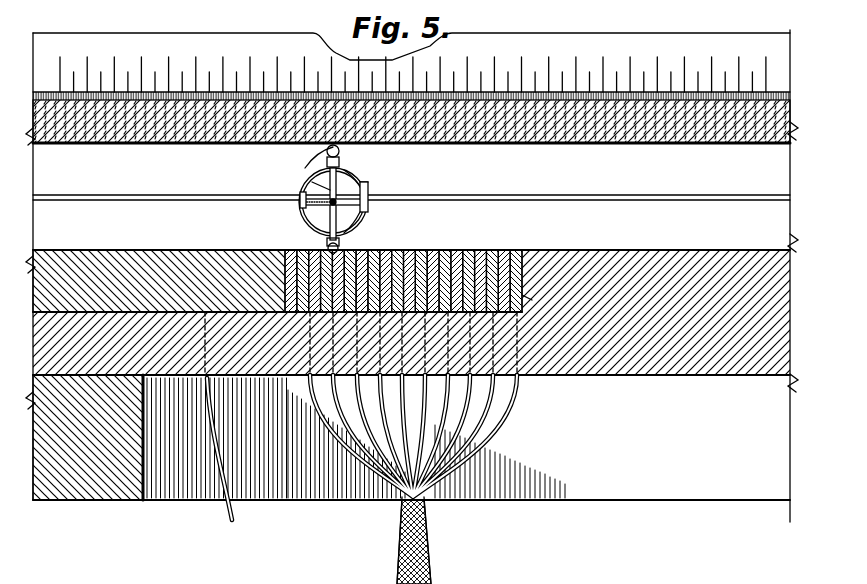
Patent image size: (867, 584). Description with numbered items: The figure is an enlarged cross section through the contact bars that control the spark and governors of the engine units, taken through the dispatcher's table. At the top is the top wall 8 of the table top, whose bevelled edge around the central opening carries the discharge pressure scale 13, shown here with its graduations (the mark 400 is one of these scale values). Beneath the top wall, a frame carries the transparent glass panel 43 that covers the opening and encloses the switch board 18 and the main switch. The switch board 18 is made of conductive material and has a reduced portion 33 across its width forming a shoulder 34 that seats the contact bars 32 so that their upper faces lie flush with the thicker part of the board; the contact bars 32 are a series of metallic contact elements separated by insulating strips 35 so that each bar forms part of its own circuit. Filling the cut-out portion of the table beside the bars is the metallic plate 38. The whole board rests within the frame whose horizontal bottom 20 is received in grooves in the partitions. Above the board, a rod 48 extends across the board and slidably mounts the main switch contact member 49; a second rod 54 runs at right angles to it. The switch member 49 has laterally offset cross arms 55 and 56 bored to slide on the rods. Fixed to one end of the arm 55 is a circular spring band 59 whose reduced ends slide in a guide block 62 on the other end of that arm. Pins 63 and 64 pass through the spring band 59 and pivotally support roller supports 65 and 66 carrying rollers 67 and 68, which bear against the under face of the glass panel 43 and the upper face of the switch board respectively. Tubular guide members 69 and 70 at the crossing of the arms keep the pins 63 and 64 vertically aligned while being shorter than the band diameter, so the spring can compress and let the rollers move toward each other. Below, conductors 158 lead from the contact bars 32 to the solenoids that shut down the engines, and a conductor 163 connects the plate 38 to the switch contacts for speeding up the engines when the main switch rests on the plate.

The top wall 8 is at (664, 37).
The discharge pressure scale 13 is at (215, 55).
The scale graduation mark 400 is at (411, 70).
The glass panel 43 is at (592, 136).
The rod 48 is at (478, 197).
The spring band 59 is at (308, 228).
The pin 63 is at (328, 170).
The rod 54 is at (308, 207).
The tubular guide member 70 is at (362, 206).
The roller 67 is at (345, 150).
The roller support 65 is at (318, 144).
The cross arm 56 is at (352, 185).
The main switch contact member 49 is at (366, 190).
The guide block 62 is at (370, 196).
The tubular guide member 69 is at (318, 190).
The cross arm 55 is at (305, 196).
The pin 64 is at (365, 226).
The roller support 66 is at (325, 242).
The roller 68 is at (342, 244).
The metallic plate 38 is at (103, 275).
The contact bars 32 is at (405, 258).
The insulating strips 35 is at (502, 268).
The shoulder 34 is at (523, 272).
The reduced portion 33 is at (527, 300).
The switch board 18 is at (665, 360).
The bottom 20 is at (100, 478).
The conductors 158 is at (510, 420).
The conductor 163 is at (228, 515).